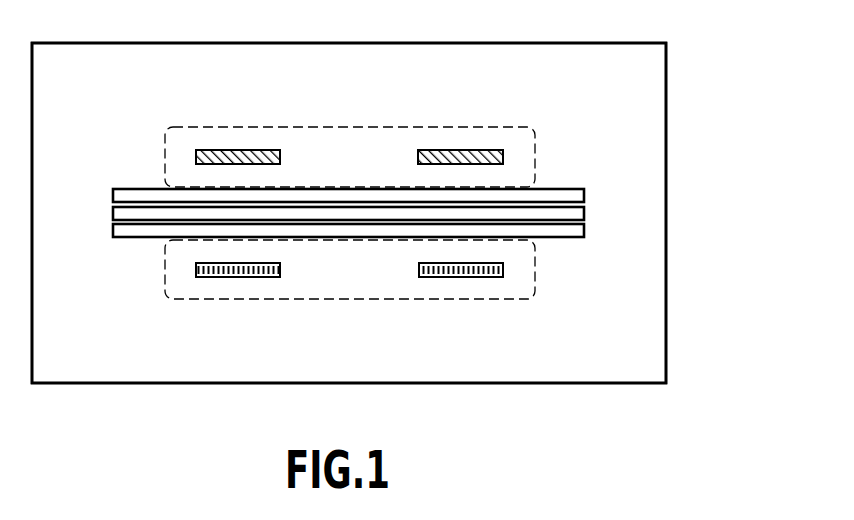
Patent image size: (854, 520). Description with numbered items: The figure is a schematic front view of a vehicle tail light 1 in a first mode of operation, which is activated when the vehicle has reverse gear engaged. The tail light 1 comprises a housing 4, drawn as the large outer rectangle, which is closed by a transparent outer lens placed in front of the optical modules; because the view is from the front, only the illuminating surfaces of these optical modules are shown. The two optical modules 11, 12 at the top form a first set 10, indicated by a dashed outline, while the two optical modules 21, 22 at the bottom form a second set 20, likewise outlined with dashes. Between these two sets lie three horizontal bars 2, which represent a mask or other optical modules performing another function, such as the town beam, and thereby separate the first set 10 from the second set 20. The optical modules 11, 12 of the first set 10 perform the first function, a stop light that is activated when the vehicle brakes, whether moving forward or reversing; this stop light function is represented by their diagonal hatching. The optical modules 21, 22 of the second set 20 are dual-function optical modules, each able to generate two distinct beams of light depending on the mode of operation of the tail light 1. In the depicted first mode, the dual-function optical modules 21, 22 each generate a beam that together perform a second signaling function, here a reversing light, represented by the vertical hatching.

The tail light 1 is at (686, 70).
The horizontal bars 2 is at (600, 213).
The housing 4 is at (666, 150).
The first set 10 is at (521, 155).
The optical module 11 is at (241, 150).
The optical module 12 is at (458, 150).
The second set 20 is at (522, 270).
The dual-function optical module 21 is at (241, 278).
The dual-function optical module 22 is at (457, 278).